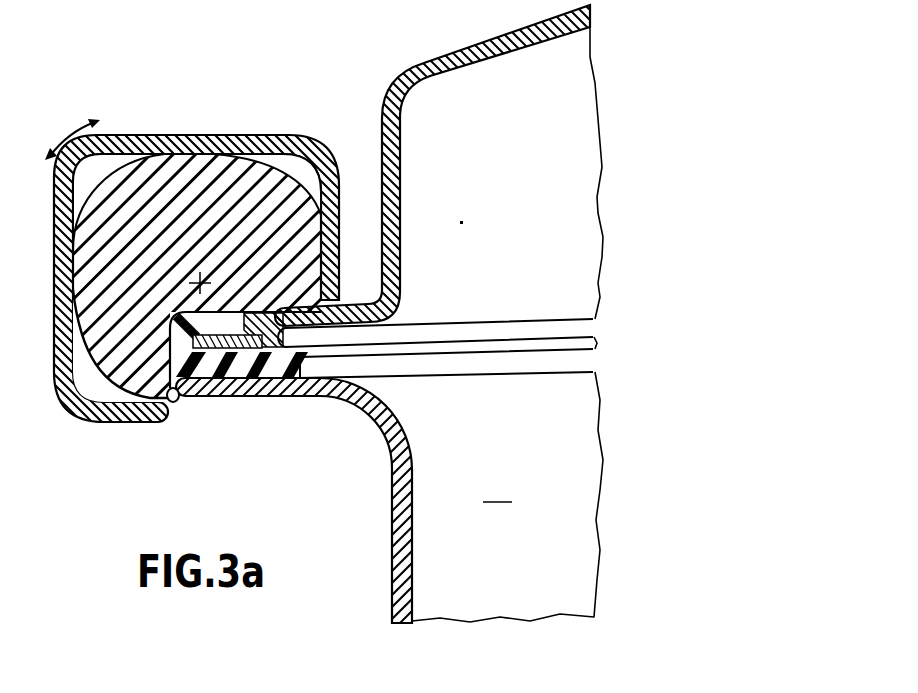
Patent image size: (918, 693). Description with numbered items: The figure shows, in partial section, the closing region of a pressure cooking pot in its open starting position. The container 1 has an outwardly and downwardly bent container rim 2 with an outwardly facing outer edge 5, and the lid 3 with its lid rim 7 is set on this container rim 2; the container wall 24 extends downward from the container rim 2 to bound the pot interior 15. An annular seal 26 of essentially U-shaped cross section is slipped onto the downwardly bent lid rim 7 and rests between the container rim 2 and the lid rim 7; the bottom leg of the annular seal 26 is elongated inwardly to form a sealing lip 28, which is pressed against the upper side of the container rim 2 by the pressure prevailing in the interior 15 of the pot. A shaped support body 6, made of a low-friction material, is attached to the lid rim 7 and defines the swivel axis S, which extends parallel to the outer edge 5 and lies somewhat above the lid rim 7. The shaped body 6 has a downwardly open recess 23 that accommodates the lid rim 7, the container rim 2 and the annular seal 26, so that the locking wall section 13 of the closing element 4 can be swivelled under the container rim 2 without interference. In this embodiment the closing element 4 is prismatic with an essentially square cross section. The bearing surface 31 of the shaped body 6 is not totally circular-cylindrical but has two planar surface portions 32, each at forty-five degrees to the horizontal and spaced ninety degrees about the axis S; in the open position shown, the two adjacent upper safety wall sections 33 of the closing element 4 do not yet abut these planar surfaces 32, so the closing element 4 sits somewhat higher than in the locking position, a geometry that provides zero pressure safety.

The container 1 is at (378, 481).
The container rim 2 is at (313, 393).
The lid 3 is at (467, 55).
The closing element 4 is at (249, 134).
The outer edge of container rim 5 is at (203, 400).
The shaped support body 6 is at (366, 346).
The lid rim 7 is at (346, 312).
The locking wall section 13 is at (141, 422).
The interior 15 is at (497, 489).
The recess 23 is at (176, 403).
The wall of first housing part 24 is at (408, 545).
The annular seal 26 is at (297, 337).
The sealing lip 28 is at (288, 381).
The bearing surface 31 is at (107, 381).
The planar surface portions 32 is at (122, 180).
The upper safety wall sections 33 is at (213, 138).
The swivel axis S is at (206, 278).